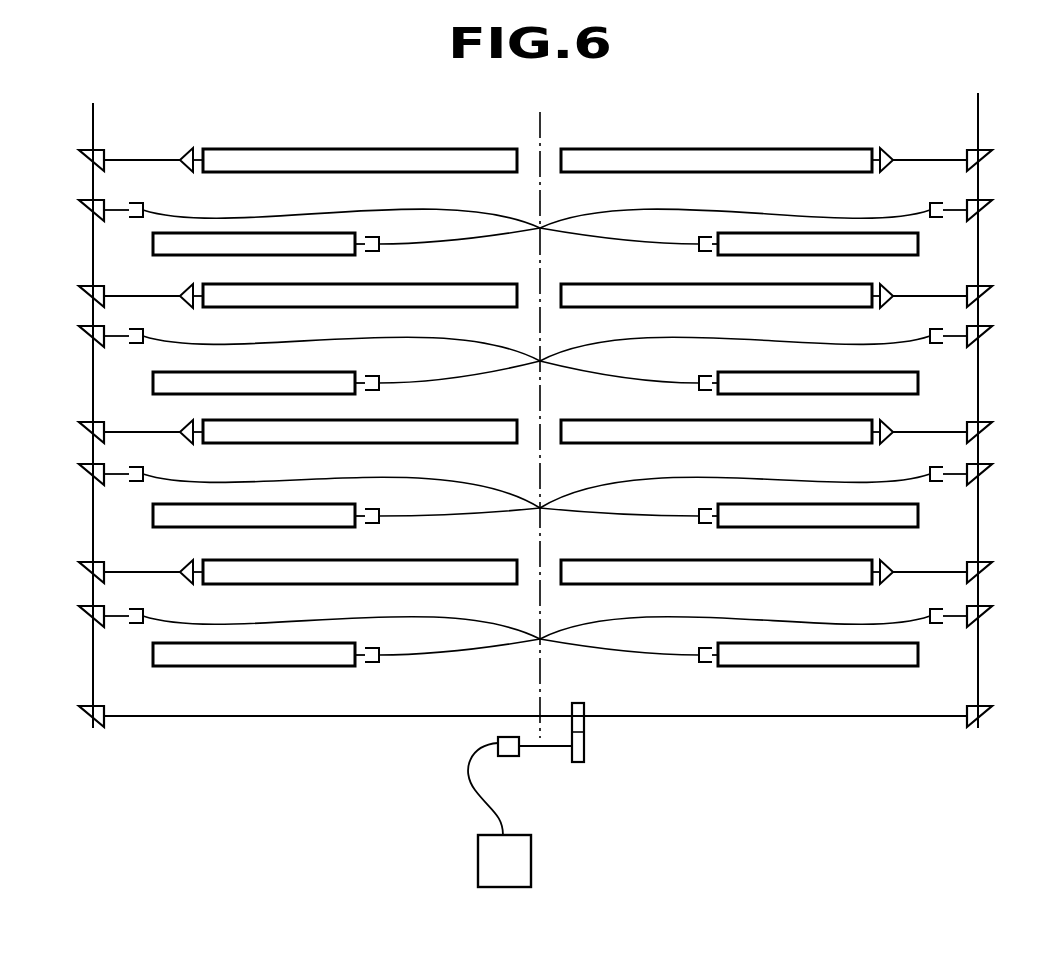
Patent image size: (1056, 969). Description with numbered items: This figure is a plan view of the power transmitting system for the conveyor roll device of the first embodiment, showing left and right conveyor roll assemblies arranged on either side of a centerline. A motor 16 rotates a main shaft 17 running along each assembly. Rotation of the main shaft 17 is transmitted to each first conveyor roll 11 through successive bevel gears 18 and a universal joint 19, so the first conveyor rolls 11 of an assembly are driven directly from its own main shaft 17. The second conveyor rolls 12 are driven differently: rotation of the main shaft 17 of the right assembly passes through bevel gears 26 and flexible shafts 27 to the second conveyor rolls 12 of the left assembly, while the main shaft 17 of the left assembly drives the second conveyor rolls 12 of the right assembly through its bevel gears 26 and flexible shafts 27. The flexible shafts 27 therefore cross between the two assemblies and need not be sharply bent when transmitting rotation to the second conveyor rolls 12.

The first conveyor roll 11 is at (345, 160).
The second conveyor roll 12 is at (250, 668).
The motor 16 is at (518, 865).
The main shaft 17 is at (93, 538).
The bevel gears 18 is at (80, 151).
The universal joint 19 is at (124, 296).
The bevel gears 26 is at (82, 336).
The flexible shaft 27 is at (636, 207).